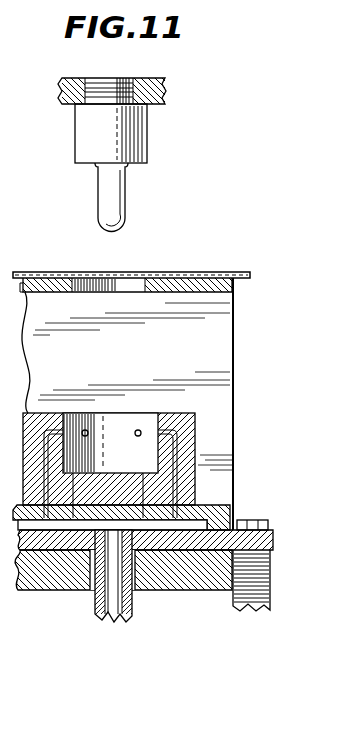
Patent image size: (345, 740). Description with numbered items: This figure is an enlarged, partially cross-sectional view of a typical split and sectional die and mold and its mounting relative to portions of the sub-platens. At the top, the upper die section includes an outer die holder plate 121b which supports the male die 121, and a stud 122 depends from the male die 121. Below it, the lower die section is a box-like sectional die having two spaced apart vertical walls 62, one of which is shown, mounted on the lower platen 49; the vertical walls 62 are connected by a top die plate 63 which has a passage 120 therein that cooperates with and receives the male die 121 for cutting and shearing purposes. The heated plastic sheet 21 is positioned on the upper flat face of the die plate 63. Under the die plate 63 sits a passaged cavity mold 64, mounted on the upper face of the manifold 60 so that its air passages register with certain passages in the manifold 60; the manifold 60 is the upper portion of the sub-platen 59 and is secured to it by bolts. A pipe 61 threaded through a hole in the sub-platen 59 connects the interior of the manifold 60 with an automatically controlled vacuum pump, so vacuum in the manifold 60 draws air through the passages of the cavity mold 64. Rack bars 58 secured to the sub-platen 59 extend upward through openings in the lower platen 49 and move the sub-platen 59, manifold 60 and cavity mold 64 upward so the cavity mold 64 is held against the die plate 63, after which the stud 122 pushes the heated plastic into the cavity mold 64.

The outer die holder plate 121b is at (166, 92).
The male die 121 is at (148, 138).
The depending stud 122 is at (128, 200).
The passage 120 is at (134, 278).
The plastic sheet 21 is at (215, 272).
The top die plate 63 is at (236, 283).
The vertical sidewall 62 is at (234, 380).
The cavity mold 64 is at (196, 413).
The manifold 60 is at (232, 508).
The sub-platen 59 is at (275, 540).
The lower platen 49 is at (180, 578).
The pipe 61 is at (75, 612).
The rack bar 58 is at (270, 585).